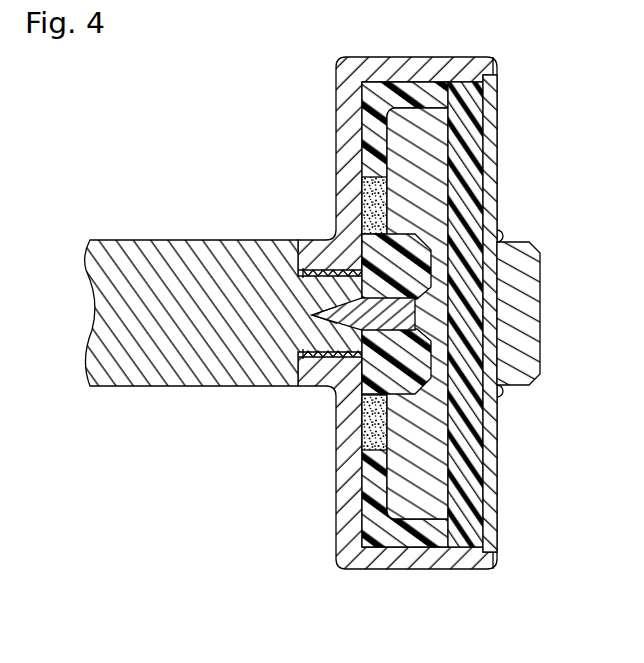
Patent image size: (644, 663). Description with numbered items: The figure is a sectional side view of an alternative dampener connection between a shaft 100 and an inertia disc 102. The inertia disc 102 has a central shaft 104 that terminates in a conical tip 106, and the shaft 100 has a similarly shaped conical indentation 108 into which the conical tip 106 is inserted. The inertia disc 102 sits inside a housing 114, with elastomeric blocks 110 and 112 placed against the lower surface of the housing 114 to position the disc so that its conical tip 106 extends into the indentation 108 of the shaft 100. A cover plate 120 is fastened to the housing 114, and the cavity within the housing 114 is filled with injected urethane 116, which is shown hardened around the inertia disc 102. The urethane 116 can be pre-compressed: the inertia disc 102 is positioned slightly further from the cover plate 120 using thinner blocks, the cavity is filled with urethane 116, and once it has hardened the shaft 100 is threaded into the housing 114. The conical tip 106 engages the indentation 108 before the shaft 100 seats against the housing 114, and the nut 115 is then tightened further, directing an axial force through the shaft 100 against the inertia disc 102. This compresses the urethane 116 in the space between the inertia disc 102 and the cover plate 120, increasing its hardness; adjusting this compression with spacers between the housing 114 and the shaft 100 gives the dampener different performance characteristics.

The shaft 100 is at (147, 386).
The inertia disc 102 is at (435, 168).
The central shaft 104 is at (373, 318).
The conical tip 106 is at (337, 313).
The conical indentation 108 is at (266, 241).
The elastomeric block 110 is at (362, 453).
The elastomeric block 112 is at (361, 201).
The housing 114 is at (386, 568).
The nut 115 is at (536, 311).
The urethane 116 is at (488, 507).
The cover plate 120 is at (497, 413).